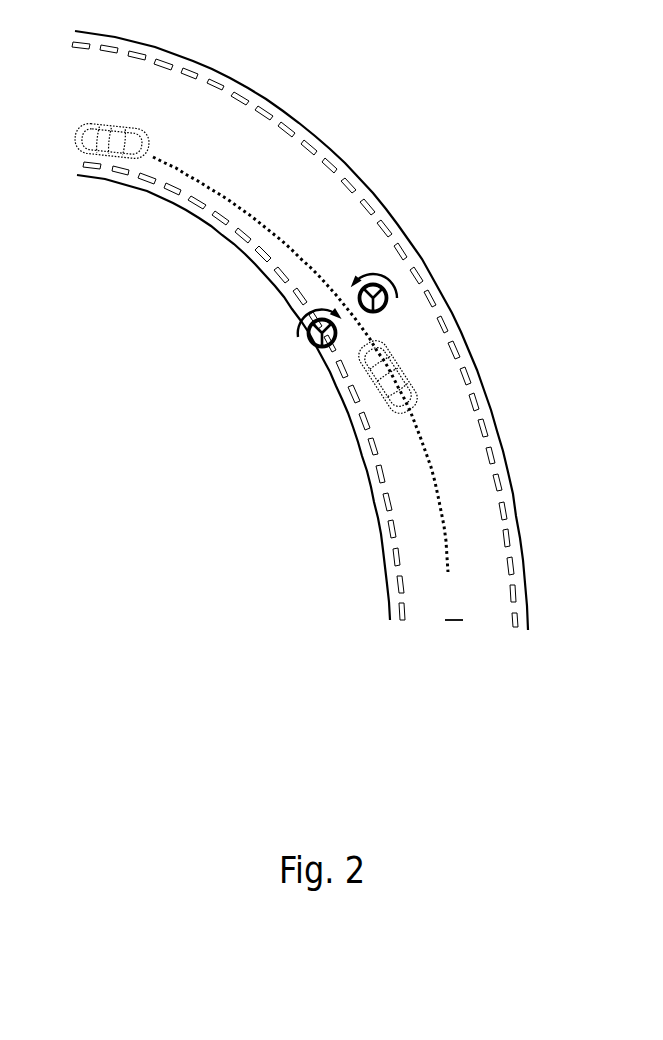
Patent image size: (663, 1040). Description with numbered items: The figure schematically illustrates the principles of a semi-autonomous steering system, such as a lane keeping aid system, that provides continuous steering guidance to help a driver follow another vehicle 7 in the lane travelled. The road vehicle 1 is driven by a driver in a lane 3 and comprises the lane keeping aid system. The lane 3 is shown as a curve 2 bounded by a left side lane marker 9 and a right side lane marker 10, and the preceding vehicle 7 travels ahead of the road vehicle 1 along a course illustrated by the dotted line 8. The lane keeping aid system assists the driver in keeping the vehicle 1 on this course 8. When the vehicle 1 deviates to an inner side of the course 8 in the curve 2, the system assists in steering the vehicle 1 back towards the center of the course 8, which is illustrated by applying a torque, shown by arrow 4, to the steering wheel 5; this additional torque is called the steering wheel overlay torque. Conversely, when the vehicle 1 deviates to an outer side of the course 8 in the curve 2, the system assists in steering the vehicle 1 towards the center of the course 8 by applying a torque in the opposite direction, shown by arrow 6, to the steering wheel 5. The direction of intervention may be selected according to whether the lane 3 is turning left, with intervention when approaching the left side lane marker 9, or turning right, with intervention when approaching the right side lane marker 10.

The road vehicle 1 is at (385, 388).
The curve 2 is at (340, 461).
The lane 3 is at (454, 607).
The arrow 4 is at (299, 320).
The steering wheel 5 is at (322, 348).
The arrow 6 is at (388, 268).
The another vehicle 7 is at (120, 145).
The dotted line 8 is at (243, 207).
The left side lane marker 9 is at (201, 209).
The right side lane marker 10 is at (257, 90).